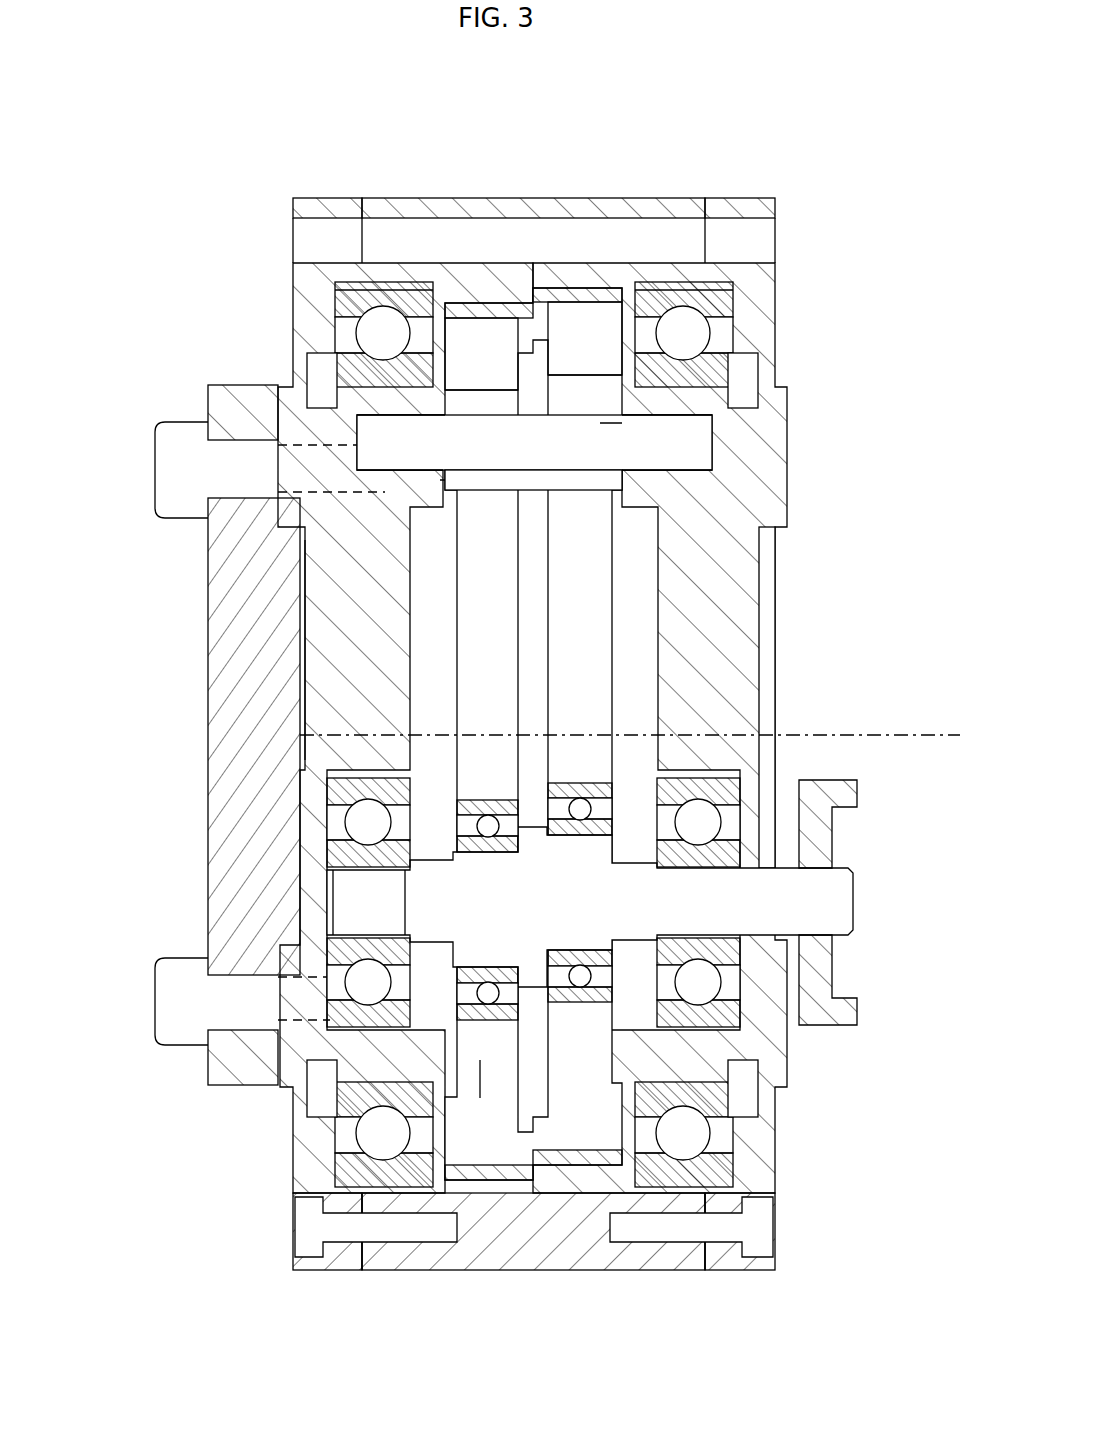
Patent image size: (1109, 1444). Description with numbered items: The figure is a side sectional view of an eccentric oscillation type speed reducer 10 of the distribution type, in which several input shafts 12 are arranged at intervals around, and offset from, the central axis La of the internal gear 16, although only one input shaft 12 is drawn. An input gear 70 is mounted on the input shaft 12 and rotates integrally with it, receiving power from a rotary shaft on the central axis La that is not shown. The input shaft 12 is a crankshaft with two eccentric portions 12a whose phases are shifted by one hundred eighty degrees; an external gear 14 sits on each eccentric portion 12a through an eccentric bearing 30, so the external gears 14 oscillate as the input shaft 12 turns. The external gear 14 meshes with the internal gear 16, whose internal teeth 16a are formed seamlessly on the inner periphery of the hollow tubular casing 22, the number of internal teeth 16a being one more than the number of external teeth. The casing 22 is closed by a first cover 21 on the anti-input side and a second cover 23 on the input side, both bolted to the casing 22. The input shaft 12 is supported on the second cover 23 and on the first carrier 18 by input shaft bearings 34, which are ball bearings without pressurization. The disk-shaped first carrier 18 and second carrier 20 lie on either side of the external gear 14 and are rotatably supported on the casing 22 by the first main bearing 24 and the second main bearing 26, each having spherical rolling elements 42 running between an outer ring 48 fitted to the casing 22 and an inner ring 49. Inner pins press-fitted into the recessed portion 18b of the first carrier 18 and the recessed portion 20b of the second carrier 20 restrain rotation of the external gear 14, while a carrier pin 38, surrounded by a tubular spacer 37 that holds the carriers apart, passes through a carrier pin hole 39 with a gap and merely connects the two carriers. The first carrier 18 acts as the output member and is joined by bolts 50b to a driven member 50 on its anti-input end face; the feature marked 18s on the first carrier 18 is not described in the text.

The eccentric oscillation type speed reducer 10 is at (730, 124).
The input shaft 12 is at (835, 900).
The eccentric portion 12a is at (477, 960).
The external gear 14 is at (515, 330).
The internal gear 16 is at (485, 300).
The internal teeth 16a is at (566, 300).
The first carrier 18 is at (300, 405).
The recessed portion 18b is at (383, 413).
The inner surface of first housing 18s is at (298, 372).
The second carrier 20 is at (700, 500).
The recessed portion 20b is at (672, 461).
The first cover 21 is at (322, 198).
The casing 22 is at (425, 208).
The second cover 23 is at (742, 198).
The first main bearing 24 is at (316, 326).
The second main bearing 26 is at (758, 338).
The eccentric bearing 30 is at (612, 765).
The input shaft bearing 34 is at (745, 797).
The spacer 37 is at (560, 490).
The carrier pin 38 is at (690, 438).
The carrier pin hole 39 is at (600, 423).
The rolling element 42 is at (370, 333).
The outer ring 48 is at (352, 288).
The inner ring 49 is at (313, 378).
The driven member 50 is at (212, 630).
The bolts 50b is at (157, 480).
The input gear 70 is at (830, 982).
The central axis La is at (930, 720).